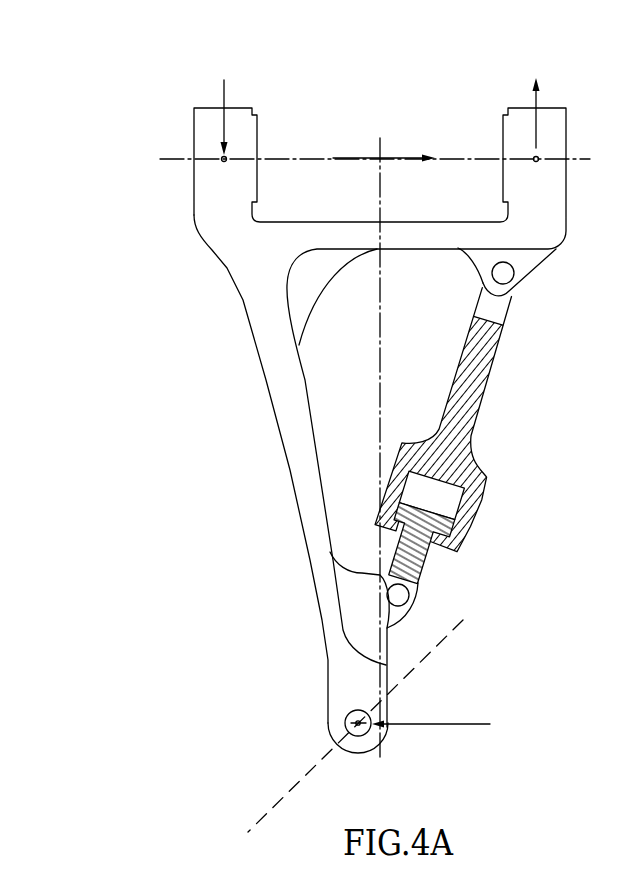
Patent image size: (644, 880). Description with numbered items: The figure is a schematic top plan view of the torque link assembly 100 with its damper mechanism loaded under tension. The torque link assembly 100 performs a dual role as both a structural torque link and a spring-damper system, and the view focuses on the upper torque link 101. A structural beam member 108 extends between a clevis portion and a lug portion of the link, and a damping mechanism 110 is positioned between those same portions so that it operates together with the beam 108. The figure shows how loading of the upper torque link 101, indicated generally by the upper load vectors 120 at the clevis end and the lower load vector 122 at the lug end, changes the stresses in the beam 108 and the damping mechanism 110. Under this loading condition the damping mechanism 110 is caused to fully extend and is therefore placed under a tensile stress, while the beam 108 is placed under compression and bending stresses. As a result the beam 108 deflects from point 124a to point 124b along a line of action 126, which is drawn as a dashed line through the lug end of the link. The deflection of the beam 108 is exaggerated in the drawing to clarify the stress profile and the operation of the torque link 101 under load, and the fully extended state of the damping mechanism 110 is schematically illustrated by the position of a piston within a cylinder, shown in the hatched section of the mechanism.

The torque link assembly 100 is at (160, 98).
The upper torque link 101 is at (195, 296).
The structural beam member 108 is at (287, 463).
The damping mechanism 110 is at (473, 420).
The upper load vectors 120 is at (224, 95).
The lower load vector 122 is at (427, 724).
The point 124a is at (375, 697).
The point 124b is at (365, 736).
The line of action 126 is at (443, 645).